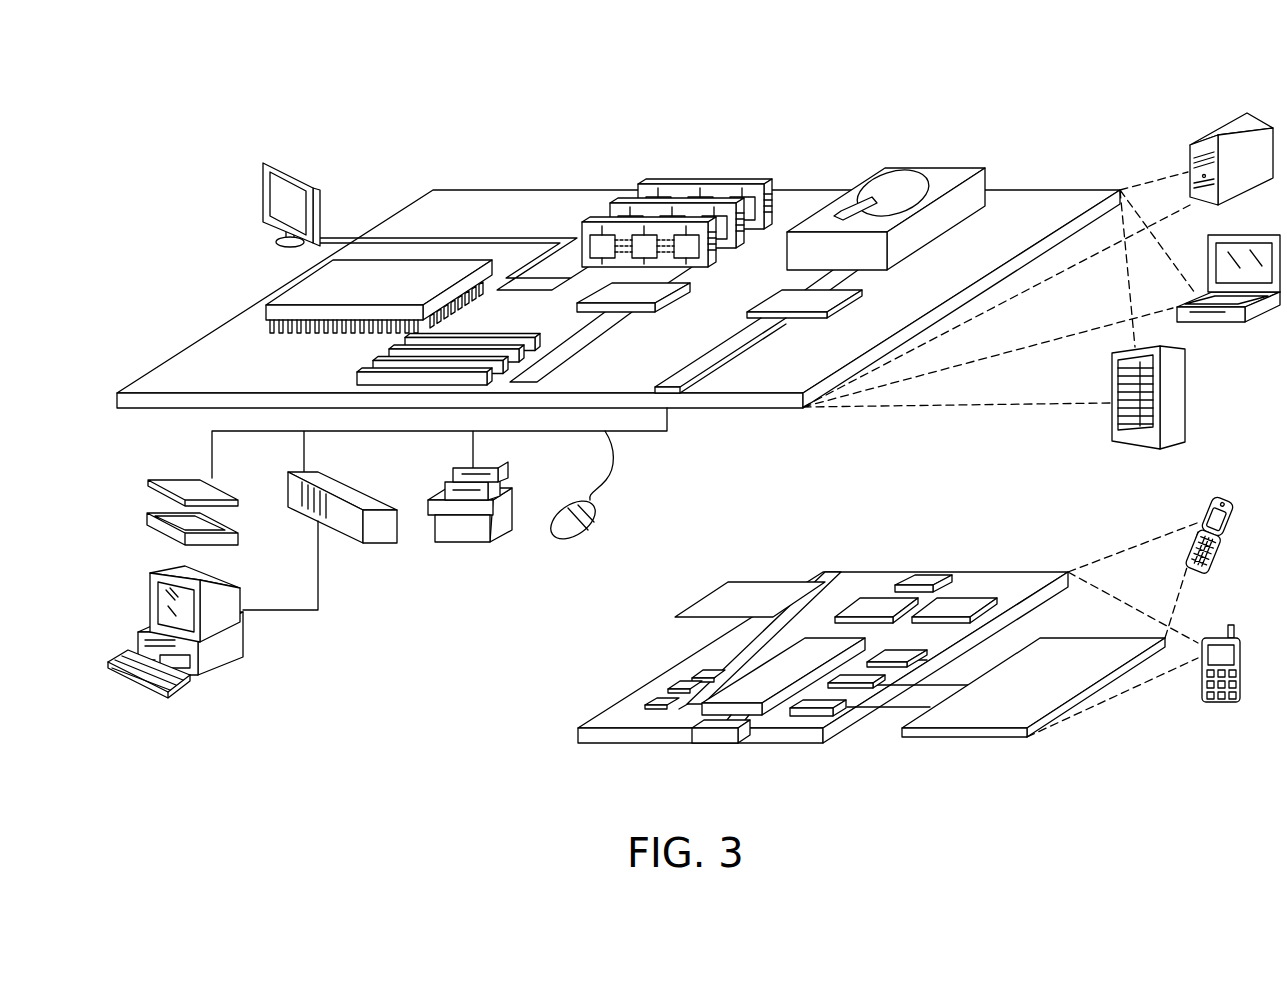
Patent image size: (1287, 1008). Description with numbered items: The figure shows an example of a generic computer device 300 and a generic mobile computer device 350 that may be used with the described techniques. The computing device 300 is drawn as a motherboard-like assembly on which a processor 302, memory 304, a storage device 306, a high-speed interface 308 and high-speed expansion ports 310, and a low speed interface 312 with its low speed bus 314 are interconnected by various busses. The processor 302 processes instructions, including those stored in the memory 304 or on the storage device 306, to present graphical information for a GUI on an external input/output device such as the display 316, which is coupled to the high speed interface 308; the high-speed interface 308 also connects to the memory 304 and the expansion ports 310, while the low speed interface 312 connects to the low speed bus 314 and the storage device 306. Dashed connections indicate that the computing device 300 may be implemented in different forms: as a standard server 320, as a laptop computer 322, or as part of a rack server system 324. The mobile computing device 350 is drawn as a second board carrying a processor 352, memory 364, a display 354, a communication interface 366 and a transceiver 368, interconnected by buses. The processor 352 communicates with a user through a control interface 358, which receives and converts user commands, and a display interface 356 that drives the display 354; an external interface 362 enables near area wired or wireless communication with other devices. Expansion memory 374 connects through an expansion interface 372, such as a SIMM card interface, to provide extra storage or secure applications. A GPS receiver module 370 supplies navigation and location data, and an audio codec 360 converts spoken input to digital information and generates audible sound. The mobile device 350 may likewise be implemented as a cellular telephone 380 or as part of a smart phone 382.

The computing device 300 is at (389, 138).
The processor 302 is at (292, 290).
The memory 304 is at (708, 183).
The storage device 306 is at (923, 167).
The high-speed interface 308 is at (645, 290).
The high-speed expansion ports 310 is at (380, 358).
The low speed interface 312 is at (778, 293).
The low speed bus 314 is at (673, 380).
The display 316 is at (267, 163).
The standard server 320 is at (1210, 138).
The laptop computer 322 is at (1262, 233).
The rack server system 324 is at (1187, 397).
The mobile computer device 350 is at (532, 756).
The processor 352 is at (752, 682).
The display 354 is at (1069, 652).
The display interface 356 is at (838, 706).
The control interface 358 is at (863, 680).
The audio codec 360 is at (897, 650).
The external interface 362 is at (717, 729).
The memory 364 is at (673, 687).
The communication interface 366 is at (877, 598).
The transceiver 368 is at (963, 602).
The GPS receiver module 370 is at (927, 577).
The expansion interface 372 is at (805, 582).
The expansion memory 374 is at (728, 582).
The cellular telephone 380 is at (1207, 498).
The smart phone 382 is at (1215, 638).